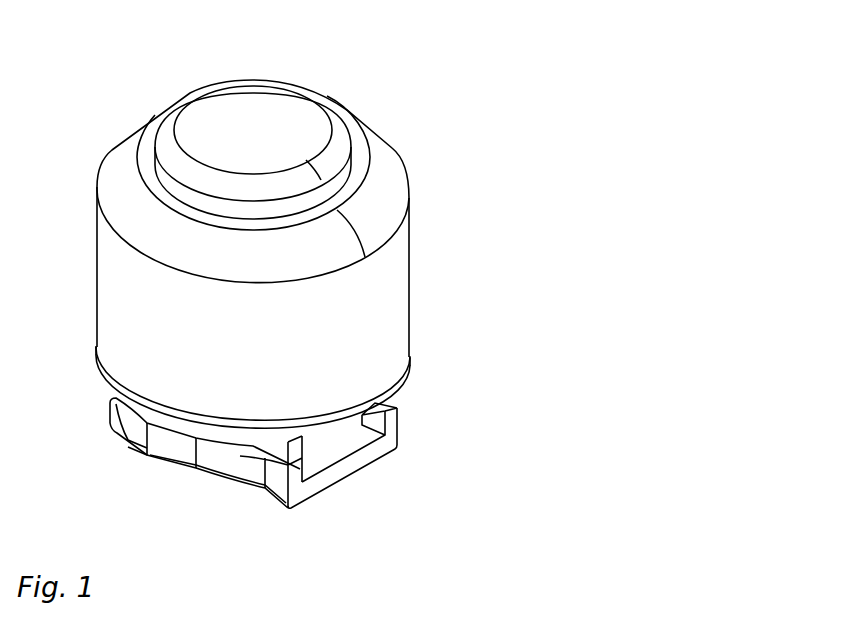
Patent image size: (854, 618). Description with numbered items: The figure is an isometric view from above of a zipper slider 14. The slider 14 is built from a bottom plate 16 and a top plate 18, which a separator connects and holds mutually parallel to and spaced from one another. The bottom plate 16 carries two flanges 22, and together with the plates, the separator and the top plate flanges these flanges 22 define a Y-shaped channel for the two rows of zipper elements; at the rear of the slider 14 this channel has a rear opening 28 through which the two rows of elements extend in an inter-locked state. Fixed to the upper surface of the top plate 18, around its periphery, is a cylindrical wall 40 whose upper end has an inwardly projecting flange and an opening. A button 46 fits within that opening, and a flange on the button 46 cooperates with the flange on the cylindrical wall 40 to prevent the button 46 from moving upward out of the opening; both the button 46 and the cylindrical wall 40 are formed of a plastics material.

The slider 14 is at (397, 133).
The button 46 is at (265, 122).
The cylindrical wall 40 is at (410, 270).
The top plate 18 is at (410, 367).
The bottom plate flanges 22 is at (390, 422).
The rear opening 28 is at (343, 446).
The bottom plate 16 is at (320, 483).